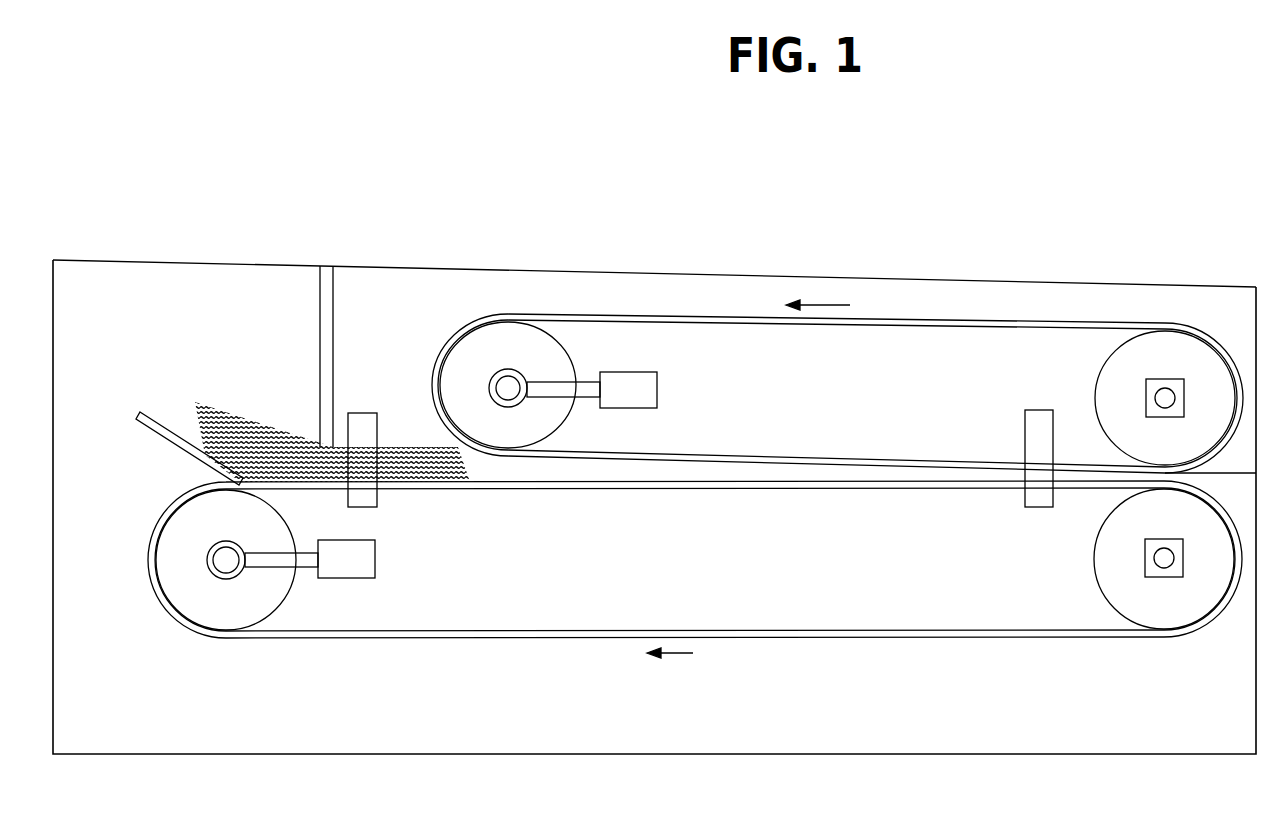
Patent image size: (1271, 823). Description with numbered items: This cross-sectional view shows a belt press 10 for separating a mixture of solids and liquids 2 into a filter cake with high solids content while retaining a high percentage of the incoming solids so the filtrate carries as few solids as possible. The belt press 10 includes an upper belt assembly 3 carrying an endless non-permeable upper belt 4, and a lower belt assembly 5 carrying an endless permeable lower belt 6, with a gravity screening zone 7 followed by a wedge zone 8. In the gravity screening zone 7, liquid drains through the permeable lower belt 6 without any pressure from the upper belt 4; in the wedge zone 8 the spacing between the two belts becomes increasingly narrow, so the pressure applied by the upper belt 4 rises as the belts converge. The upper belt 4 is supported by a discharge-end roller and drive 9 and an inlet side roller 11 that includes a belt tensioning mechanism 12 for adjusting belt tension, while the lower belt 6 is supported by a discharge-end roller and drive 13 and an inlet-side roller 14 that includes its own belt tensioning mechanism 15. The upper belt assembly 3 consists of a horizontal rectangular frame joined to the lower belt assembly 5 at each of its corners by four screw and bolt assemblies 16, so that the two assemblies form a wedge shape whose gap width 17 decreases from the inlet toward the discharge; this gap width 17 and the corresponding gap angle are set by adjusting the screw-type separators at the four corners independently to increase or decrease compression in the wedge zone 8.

The mixture of solids and liquids 2 is at (203, 403).
The upper belt assembly 3 is at (458, 261).
The upper belt 4 is at (630, 320).
The lower belt assembly 5 is at (803, 723).
The lower belt 6 is at (803, 631).
The gravity screening zone 7 is at (444, 466).
The wedge zone 8 is at (773, 481).
The discharge-end roller and drive 9 is at (1178, 365).
The belt press 10 is at (992, 241).
The inlet side roller 11 is at (475, 382).
The belt tensioning mechanism 12 is at (647, 382).
The discharge-end roller and drive 13 is at (1195, 582).
The inlet-side roller 14 is at (212, 585).
The belt tensioning mechanism 15 is at (365, 555).
The screw and bolt assemblies 16 is at (383, 411).
The gap width 17 is at (522, 462).